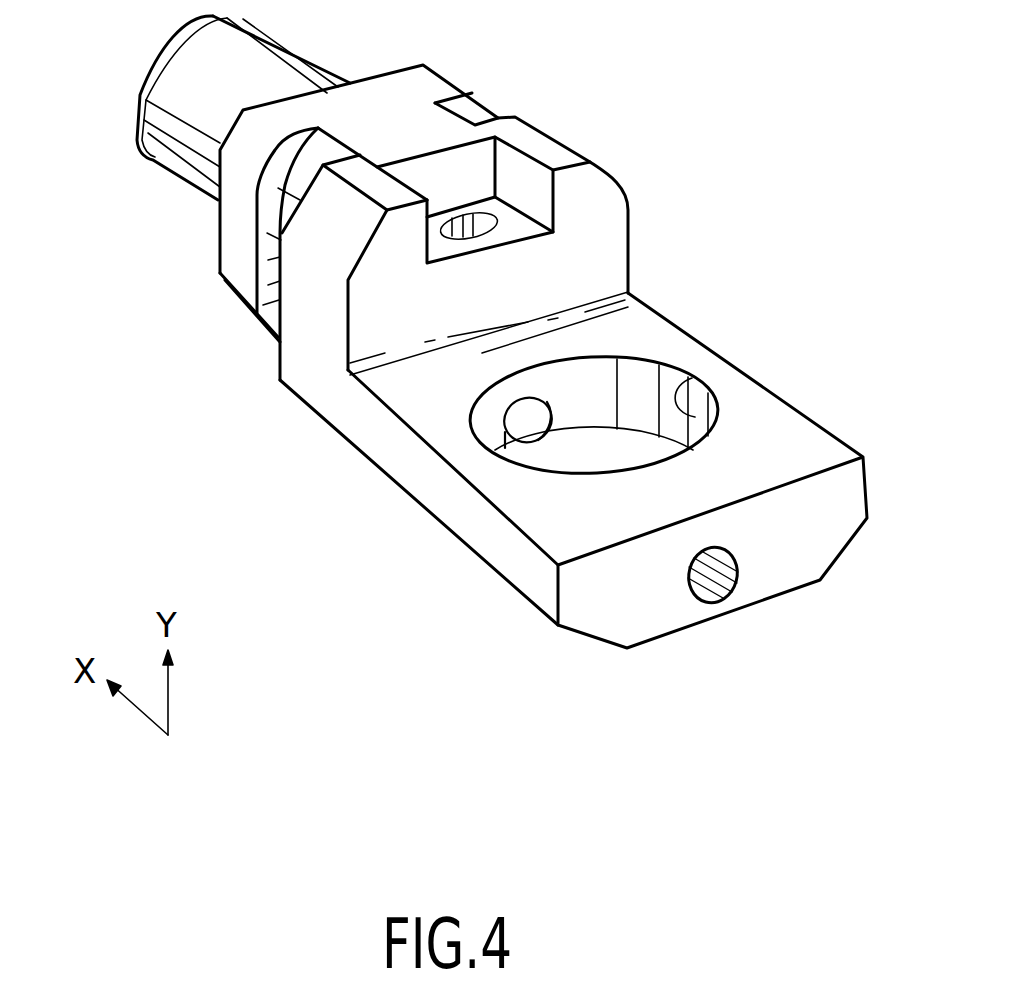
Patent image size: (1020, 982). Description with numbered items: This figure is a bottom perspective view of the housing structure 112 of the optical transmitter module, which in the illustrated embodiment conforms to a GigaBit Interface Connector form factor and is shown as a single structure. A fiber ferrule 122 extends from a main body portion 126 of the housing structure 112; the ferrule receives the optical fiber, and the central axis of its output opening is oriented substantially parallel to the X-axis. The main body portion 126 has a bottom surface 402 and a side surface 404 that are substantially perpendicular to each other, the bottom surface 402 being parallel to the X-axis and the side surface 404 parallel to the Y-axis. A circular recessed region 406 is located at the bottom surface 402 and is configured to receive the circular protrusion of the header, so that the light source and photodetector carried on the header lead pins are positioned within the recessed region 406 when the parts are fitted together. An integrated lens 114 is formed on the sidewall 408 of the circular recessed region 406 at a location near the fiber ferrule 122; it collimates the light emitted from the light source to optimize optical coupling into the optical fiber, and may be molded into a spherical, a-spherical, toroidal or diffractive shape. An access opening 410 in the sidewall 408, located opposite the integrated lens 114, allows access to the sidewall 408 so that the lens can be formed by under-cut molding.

The housing structure 112 is at (552, 150).
The integrated lens 114 is at (542, 410).
The fiber ferrule 122 is at (210, 356).
The main body portion 126 is at (557, 672).
The bottom surface 402 is at (820, 442).
The side surface 404 is at (615, 242).
The circular recessed region 406 is at (635, 390).
The sidewall 408 is at (690, 377).
The access opening 410 is at (722, 578).